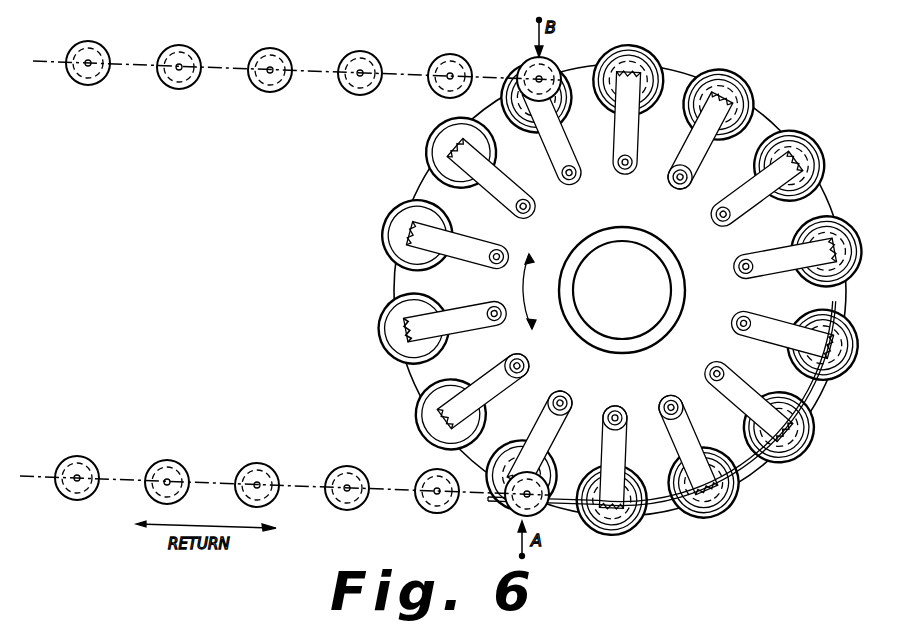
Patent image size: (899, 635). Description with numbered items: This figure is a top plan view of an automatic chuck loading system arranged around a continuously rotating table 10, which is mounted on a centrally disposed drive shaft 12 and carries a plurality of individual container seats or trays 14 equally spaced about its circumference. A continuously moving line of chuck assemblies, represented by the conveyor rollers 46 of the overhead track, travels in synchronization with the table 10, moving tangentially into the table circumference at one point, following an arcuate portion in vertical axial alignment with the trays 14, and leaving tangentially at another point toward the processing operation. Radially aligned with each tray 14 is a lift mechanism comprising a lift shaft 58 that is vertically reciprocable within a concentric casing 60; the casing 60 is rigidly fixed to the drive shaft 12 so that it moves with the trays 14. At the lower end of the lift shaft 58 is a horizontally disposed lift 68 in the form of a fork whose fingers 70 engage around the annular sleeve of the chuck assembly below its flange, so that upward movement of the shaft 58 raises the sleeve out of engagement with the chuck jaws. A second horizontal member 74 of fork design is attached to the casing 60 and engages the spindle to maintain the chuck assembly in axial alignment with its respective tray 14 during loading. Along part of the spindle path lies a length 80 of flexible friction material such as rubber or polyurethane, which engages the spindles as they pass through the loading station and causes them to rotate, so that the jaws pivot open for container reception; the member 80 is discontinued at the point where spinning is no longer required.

The rotating table 10 is at (411, 381).
The drive shaft 12 is at (632, 224).
The container tray 14 is at (822, 166).
The conveyor chain rollers 46 is at (146, 74).
The lift shaft 58 is at (618, 404).
The casing 60 is at (676, 396).
The lift 68 is at (684, 187).
The fingers 70 is at (418, 312).
The second horizontal member 74 is at (467, 331).
The length of flexible friction material 80 is at (758, 458).